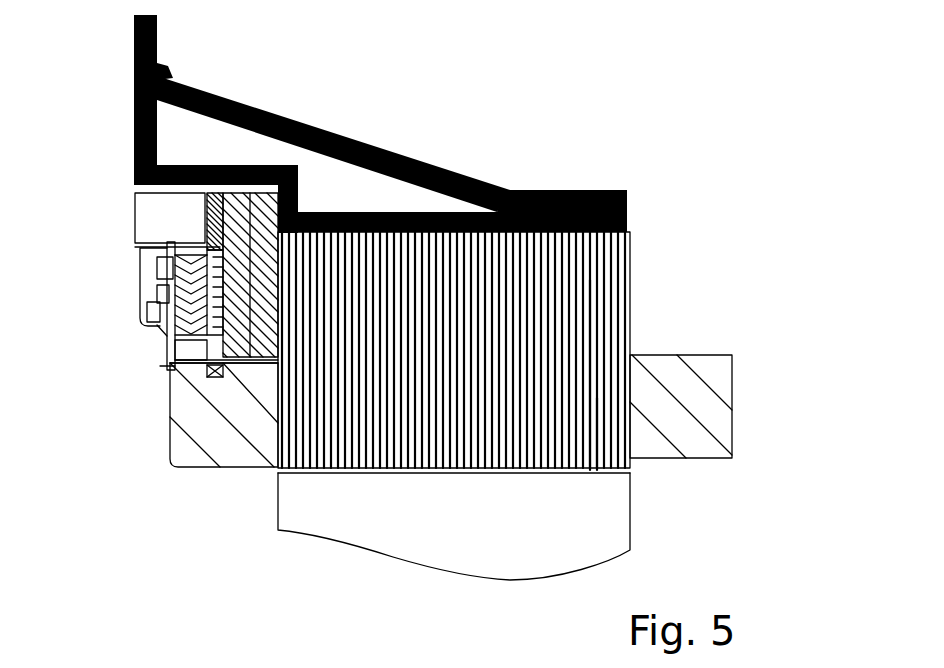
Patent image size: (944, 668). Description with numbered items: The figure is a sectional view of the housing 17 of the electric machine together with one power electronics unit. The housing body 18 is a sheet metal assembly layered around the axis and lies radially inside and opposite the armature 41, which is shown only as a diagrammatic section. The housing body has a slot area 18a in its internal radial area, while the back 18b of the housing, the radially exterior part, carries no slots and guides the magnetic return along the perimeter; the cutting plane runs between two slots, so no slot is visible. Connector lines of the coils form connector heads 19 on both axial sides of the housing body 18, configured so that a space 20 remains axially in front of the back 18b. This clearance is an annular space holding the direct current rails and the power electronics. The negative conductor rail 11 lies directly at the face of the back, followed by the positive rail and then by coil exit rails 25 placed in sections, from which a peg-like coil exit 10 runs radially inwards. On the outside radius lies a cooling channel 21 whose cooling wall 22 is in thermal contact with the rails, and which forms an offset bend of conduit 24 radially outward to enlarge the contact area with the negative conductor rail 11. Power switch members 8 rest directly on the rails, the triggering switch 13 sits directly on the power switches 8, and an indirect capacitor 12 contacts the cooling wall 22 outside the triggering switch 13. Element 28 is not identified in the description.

The power switch member 8 is at (163, 330).
The peg-like coil exit 10 is at (213, 373).
The negative conductor rail 11 is at (365, 187).
The indirect capacitor 12 is at (153, 210).
The triggering switch 13 is at (279, 167).
The housing 17 is at (740, 224).
The housing body 18 is at (634, 246).
The slot area 18a is at (597, 398).
The back of the housing 18b is at (590, 280).
The connector head 19 is at (170, 463).
The space 20 is at (102, 330).
The cooling channel 21 is at (391, 152).
The cooling wall 22 is at (238, 163).
The offset bend of conduit 24 is at (300, 198).
The coil exit rail 25 is at (157, 247).
The partition wall 28 is at (250, 345).
The armature 41 is at (617, 528).